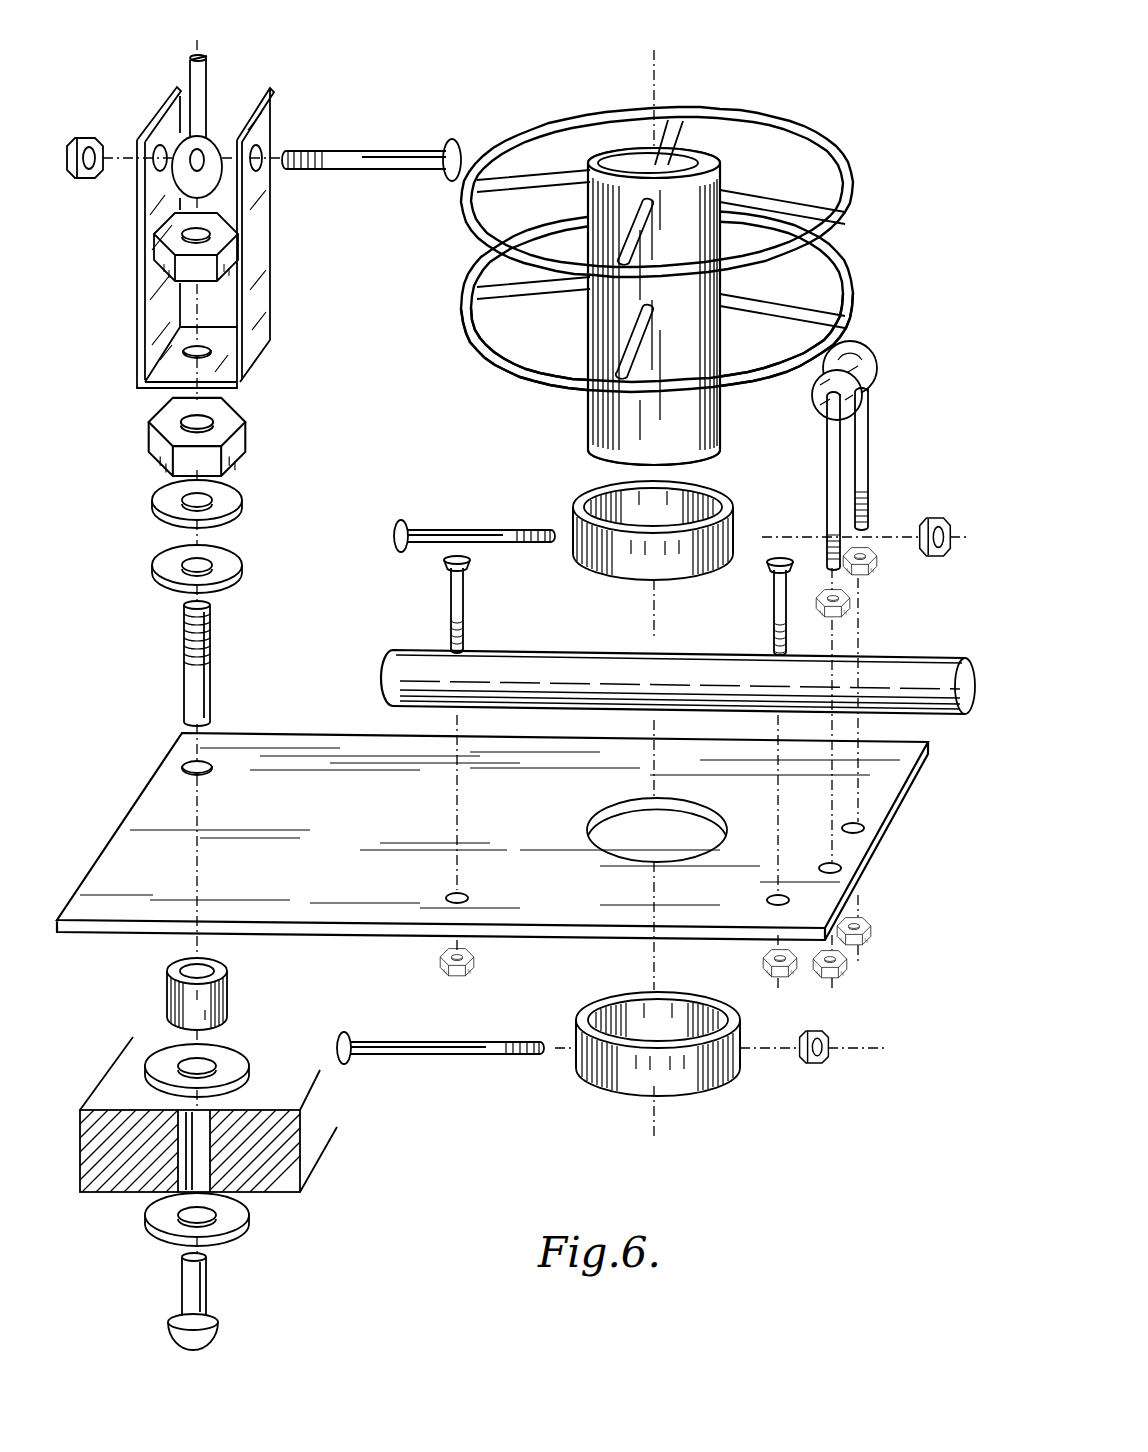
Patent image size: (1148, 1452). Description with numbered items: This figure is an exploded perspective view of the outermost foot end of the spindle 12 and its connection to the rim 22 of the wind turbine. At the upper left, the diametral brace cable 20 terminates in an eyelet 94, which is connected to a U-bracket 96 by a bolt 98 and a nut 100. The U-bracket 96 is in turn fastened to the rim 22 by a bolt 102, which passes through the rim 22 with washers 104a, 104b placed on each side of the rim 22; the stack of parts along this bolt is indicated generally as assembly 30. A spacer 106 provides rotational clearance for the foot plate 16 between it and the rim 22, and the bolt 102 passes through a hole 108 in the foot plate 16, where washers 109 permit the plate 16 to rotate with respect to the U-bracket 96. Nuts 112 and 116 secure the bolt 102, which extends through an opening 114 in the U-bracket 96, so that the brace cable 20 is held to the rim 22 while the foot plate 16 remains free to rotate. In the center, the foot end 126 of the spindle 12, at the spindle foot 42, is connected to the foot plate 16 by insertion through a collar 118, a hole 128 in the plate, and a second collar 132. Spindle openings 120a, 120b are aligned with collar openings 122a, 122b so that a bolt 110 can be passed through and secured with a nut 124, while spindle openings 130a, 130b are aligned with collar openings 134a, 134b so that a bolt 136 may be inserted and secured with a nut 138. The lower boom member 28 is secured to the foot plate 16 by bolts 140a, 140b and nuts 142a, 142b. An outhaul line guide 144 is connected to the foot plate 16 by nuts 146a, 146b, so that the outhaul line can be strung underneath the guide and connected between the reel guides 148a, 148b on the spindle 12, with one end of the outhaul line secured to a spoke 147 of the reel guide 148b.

The spindle 12 is at (650, 292).
The foot plate 16 is at (492, 836).
The diametral brace cable 20 is at (206, 78).
The rim 22 is at (317, 1133).
The lower boom member 28 is at (533, 652).
The fastener assembly 30 is at (150, 655).
The spindle foot 42 is at (668, 266).
The eyelet 94 is at (185, 185).
The U-bracket 96 is at (268, 252).
The bolt 98 is at (373, 148).
The nut 100 is at (95, 140).
The bolt 102 is at (208, 1296).
The washer 104a is at (245, 1222).
The washer 104b is at (246, 1056).
The spacer 106 is at (165, 990).
The hole 108 is at (183, 766).
The washers 109 is at (153, 513).
The bolt 110 is at (440, 524).
The nut 112 is at (240, 425).
The opening 114 is at (185, 356).
The nut 116 is at (168, 266).
The collar 118 is at (657, 549).
The spindle opening 120a is at (590, 338).
The spindle opening 120b is at (722, 340).
The collar opening 122a is at (572, 528).
The collar opening 122b is at (734, 533).
The nut 124 is at (940, 518).
The foot end 126 is at (590, 438).
The hole 128 is at (703, 808).
The spindle opening 130a is at (590, 415).
The spindle opening 130b is at (722, 412).
The collar 132 is at (683, 1050).
The collar opening 134a is at (572, 1047).
The collar opening 134b is at (742, 1057).
The bolt 136 is at (475, 1057).
The nut 138 is at (821, 1062).
The bolt 140a is at (448, 603).
The bolt 140b is at (770, 598).
The nut 142a is at (459, 978).
The nut 142b is at (763, 960).
The outhaul line guide 144 is at (867, 350).
The nut 146a is at (870, 580).
The nut 146b is at (867, 942).
The spoke 147 is at (517, 303).
The reel guide 148a is at (790, 132).
The reel guide 148b is at (850, 287).